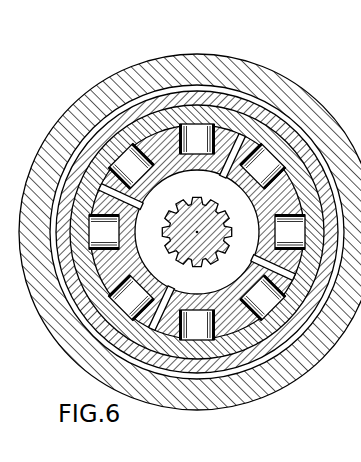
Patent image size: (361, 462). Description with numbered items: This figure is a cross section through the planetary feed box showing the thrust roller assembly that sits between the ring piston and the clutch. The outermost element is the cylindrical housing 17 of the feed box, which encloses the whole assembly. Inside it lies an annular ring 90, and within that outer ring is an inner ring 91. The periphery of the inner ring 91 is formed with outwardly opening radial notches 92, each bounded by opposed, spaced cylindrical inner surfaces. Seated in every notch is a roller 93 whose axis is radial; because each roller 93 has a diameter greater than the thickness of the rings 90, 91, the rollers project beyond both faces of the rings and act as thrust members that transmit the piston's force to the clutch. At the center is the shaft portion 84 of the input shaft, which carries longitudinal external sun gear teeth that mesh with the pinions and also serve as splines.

The cylindrical housing 17 is at (90, 93).
The shaft portion 84 is at (198, 200).
The annular ring 90 is at (148, 124).
The inner ring 91 is at (205, 126).
The radial notches 92 is at (253, 124).
The roller 93 is at (223, 99).